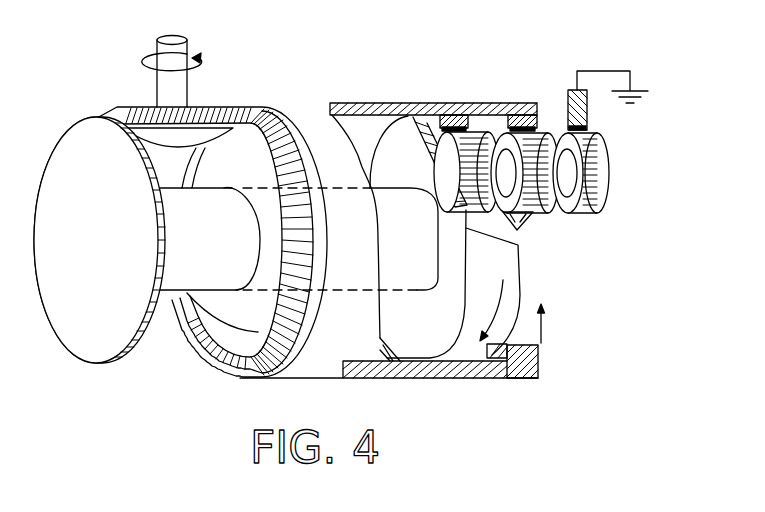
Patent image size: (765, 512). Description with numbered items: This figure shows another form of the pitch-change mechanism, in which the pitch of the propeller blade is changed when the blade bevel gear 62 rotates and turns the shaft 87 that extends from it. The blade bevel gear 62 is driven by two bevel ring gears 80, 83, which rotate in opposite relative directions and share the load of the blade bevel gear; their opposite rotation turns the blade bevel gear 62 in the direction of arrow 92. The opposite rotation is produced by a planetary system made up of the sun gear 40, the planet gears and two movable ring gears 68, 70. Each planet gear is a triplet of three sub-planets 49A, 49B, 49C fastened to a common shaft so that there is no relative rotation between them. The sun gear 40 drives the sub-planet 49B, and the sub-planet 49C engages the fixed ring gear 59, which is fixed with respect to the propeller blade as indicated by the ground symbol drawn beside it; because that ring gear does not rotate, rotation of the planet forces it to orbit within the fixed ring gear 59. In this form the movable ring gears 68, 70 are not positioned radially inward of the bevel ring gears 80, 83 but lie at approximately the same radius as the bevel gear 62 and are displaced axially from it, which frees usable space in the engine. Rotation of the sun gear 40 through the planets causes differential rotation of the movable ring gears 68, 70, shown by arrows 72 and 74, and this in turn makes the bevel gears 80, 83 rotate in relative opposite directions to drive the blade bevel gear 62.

The sun gear 40 is at (537, 235).
The sub-planet 49A is at (447, 208).
The sub-planet 49B is at (542, 213).
The sub-planet 49C is at (587, 213).
The fixed ring gear 59 is at (588, 113).
The blade bevel gear 62 is at (202, 107).
The movable ring gear 68 is at (455, 118).
The movable ring gear 70 is at (520, 120).
The arrow 72 is at (493, 313).
The arrow 74 is at (545, 329).
The bevel ring gear 80 is at (160, 260).
The bevel ring gear 83 is at (262, 229).
The shaft 87 is at (180, 52).
The arrow 92 is at (143, 62).